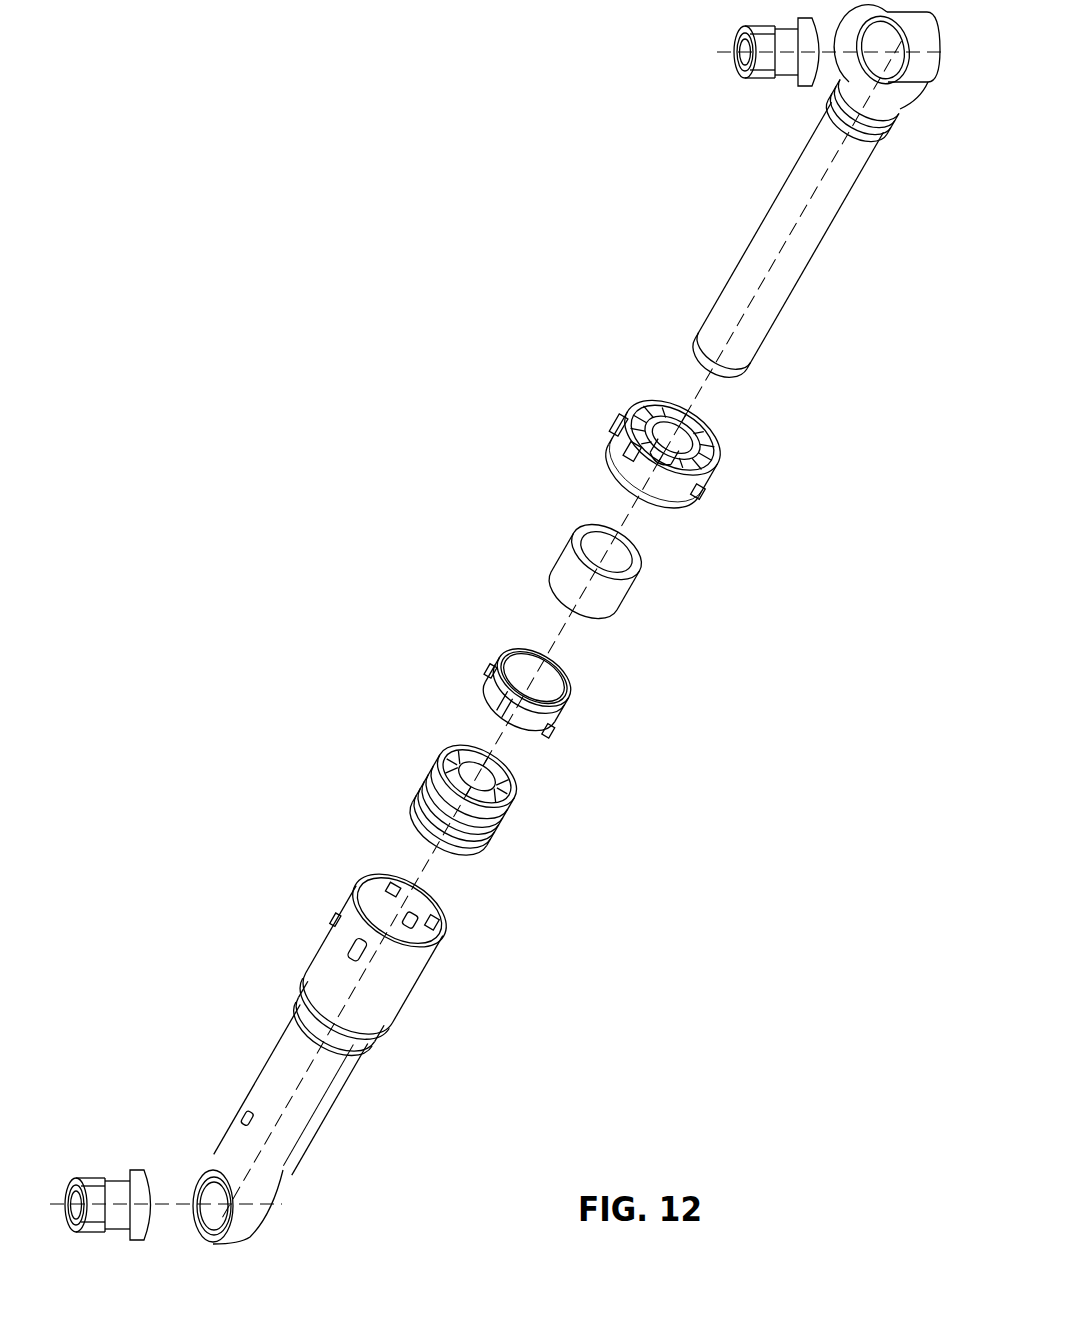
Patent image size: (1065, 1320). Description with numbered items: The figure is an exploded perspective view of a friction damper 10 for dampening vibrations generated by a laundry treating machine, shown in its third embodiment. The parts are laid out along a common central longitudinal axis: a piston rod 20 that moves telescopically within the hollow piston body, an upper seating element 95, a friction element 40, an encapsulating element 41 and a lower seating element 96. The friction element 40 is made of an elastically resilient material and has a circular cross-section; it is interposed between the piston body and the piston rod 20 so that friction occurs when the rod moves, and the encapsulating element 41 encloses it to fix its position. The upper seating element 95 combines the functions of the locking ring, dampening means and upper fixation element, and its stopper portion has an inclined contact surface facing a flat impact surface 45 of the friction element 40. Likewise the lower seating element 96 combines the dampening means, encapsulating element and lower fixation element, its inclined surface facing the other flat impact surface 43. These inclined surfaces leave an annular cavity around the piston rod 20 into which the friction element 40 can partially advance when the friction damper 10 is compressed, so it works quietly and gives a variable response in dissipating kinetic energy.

The friction damper 10 is at (366, 299).
The piston rod 20 is at (757, 270).
The upper seating element 95 is at (612, 460).
The friction element 40 is at (563, 580).
The flat impact surface 45 is at (633, 578).
The flat impact surface 43 is at (597, 622).
The encapsulating element 41 is at (490, 680).
The lower seating element 96 is at (425, 795).